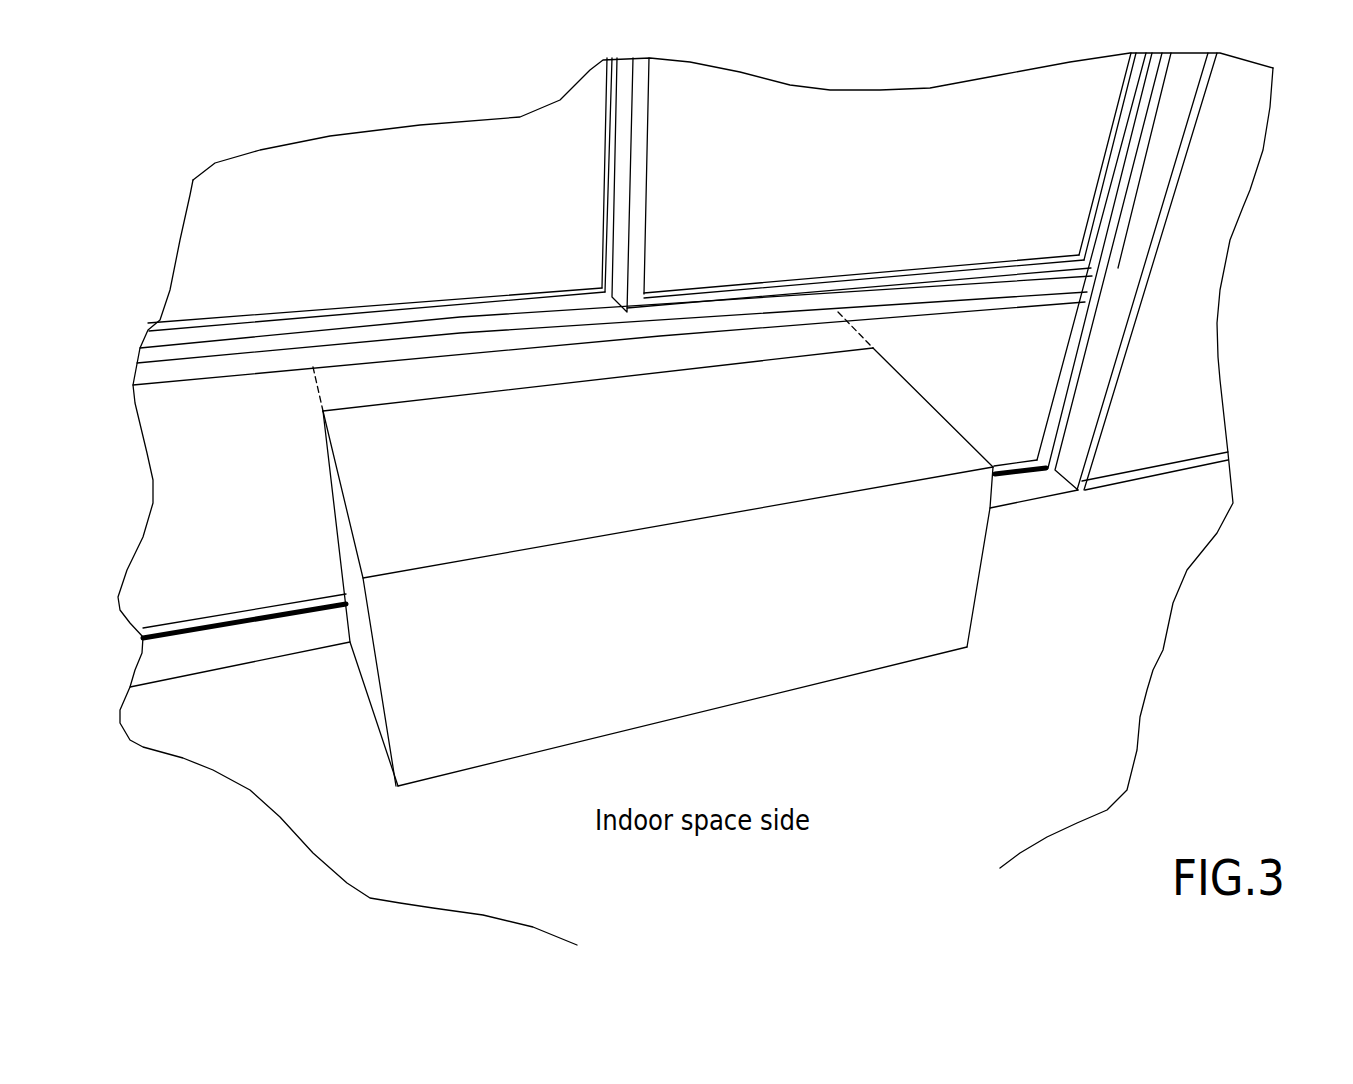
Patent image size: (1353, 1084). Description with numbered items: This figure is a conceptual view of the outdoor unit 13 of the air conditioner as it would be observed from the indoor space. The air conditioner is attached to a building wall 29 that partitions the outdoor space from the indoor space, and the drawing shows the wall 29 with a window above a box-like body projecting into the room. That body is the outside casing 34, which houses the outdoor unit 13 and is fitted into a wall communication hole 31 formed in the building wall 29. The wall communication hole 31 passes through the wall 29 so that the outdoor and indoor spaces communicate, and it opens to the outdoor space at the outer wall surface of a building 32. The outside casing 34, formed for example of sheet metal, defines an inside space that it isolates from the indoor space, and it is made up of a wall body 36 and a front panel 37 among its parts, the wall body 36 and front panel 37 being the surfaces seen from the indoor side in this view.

The outdoor unit 13 is at (640, 551).
The building wall 29 is at (1232, 171).
The wall communication hole 31 is at (822, 358).
The outer wall surface of a building 32 is at (1192, 253).
The outside casing 34 is at (932, 378).
The wall body 36 is at (338, 504).
The front panel 37 is at (950, 582).